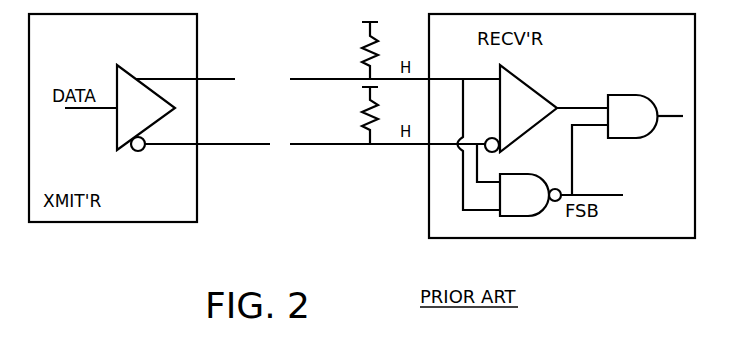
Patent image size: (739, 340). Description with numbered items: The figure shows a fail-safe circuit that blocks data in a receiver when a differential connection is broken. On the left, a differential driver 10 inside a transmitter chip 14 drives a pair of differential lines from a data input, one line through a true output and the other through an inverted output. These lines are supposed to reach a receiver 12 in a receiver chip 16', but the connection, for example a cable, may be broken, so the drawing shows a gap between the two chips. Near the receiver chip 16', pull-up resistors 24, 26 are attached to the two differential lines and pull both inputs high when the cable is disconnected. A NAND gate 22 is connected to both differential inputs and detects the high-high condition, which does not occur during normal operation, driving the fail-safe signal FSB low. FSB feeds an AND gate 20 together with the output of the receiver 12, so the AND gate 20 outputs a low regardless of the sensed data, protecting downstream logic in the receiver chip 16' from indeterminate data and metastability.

The transmitter chip 14 is at (57, 48).
The differential driver 10 is at (145, 119).
The pull-up resistor 24 is at (367, 61).
The pull-up resistor 26 is at (367, 125).
The receiver chip 16' is at (562, 126).
The receiver 12 is at (527, 119).
The NAND gate 22 is at (527, 205).
The AND gate 20 is at (637, 127).